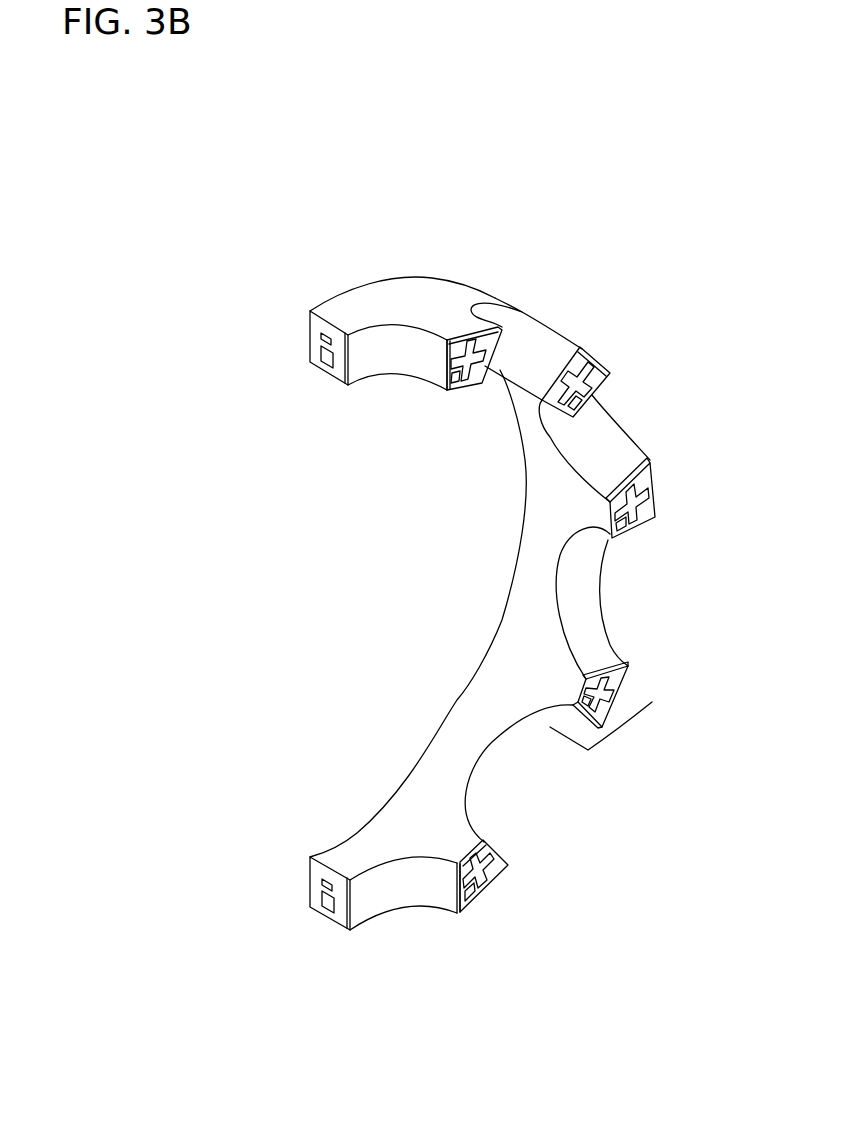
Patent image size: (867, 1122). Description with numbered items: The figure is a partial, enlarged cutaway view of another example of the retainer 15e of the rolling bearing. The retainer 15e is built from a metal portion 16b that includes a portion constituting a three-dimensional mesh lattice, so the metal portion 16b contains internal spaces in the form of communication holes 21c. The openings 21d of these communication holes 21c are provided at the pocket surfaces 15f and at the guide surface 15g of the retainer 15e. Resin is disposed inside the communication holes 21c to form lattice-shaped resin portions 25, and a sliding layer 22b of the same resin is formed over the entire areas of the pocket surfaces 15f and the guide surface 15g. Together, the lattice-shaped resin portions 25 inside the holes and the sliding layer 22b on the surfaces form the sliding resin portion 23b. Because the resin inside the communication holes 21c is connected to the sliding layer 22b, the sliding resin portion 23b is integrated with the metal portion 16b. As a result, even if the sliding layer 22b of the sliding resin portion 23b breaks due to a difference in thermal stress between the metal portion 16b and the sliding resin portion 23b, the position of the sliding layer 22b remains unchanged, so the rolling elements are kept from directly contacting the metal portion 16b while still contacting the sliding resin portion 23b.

The guide surface 15g is at (365, 297).
The retainer 15e is at (497, 290).
The lattice-shaped resin portions 25 is at (590, 360).
The sliding resin portion 23b is at (670, 297).
The sliding layer 22b is at (656, 515).
The openings 21d is at (628, 521).
The communication holes 21c is at (614, 603).
The metal portion 16b is at (517, 677).
The pocket surfaces 15f is at (592, 637).